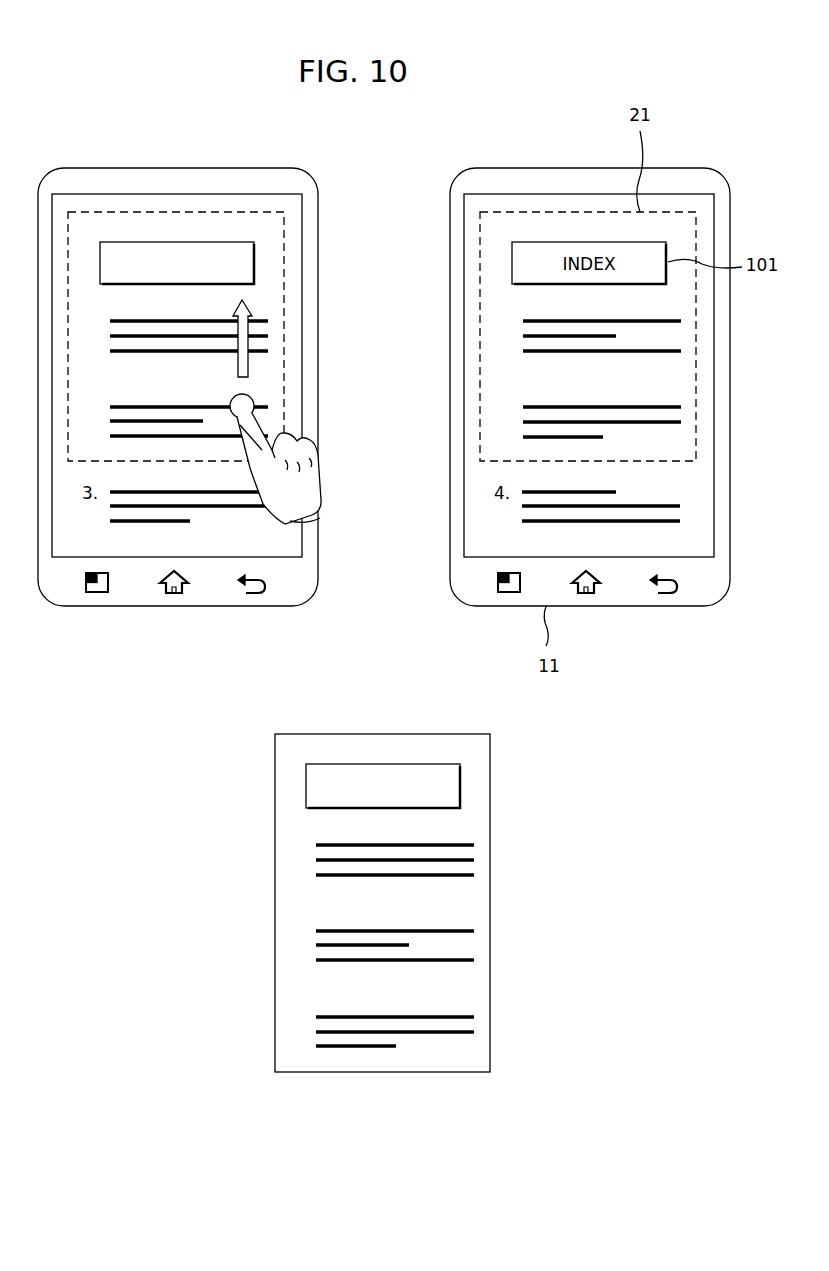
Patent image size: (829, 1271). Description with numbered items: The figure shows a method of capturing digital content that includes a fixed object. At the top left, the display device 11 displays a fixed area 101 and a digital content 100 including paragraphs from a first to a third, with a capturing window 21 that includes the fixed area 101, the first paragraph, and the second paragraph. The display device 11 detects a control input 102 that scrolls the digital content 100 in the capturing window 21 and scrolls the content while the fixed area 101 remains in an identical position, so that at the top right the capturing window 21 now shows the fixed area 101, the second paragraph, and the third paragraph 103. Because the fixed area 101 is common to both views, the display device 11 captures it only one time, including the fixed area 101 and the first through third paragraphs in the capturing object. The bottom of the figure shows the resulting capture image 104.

The display device 11 is at (134, 606).
The capturing window 21 is at (212, 212).
The digital content 100 is at (135, 227).
The fixed area 101 is at (256, 262).
The control input 102 is at (300, 483).
The scrolled page area 103 is at (548, 227).
The capture image 104 is at (387, 1073).